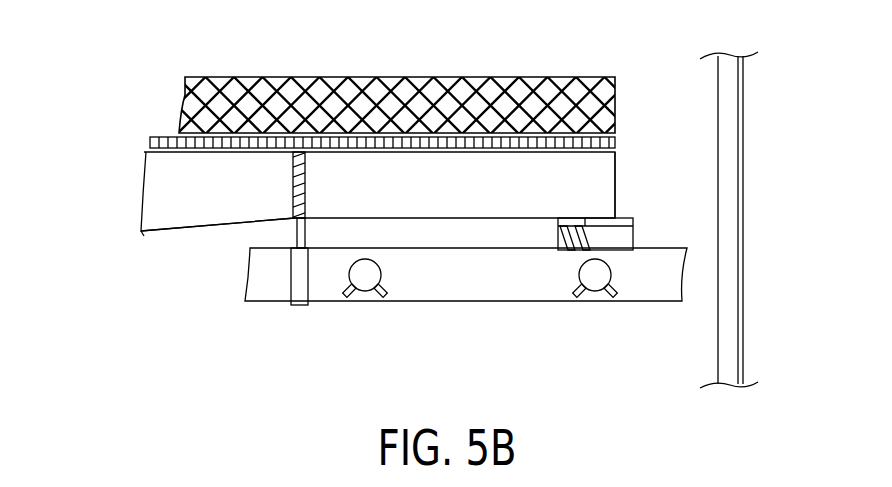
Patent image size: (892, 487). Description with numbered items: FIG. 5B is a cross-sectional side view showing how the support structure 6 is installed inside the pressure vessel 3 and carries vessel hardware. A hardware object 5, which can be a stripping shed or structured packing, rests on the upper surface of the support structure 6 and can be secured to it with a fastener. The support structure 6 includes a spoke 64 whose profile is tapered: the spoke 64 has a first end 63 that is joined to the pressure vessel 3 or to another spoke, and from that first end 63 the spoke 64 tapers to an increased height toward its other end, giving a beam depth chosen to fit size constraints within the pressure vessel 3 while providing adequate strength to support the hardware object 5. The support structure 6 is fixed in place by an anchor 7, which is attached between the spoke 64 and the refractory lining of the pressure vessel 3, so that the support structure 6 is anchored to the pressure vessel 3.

The hardware object 5 is at (512, 90).
The support structure 6 is at (150, 178).
The first end 63 is at (617, 172).
The spoke 64 is at (180, 232).
The anchor 7 is at (618, 240).
The pressure vessel 3 is at (733, 173).